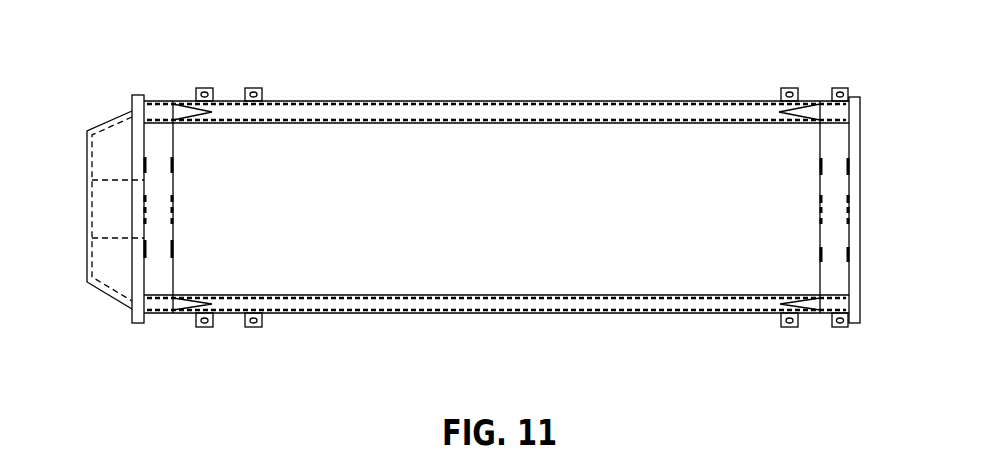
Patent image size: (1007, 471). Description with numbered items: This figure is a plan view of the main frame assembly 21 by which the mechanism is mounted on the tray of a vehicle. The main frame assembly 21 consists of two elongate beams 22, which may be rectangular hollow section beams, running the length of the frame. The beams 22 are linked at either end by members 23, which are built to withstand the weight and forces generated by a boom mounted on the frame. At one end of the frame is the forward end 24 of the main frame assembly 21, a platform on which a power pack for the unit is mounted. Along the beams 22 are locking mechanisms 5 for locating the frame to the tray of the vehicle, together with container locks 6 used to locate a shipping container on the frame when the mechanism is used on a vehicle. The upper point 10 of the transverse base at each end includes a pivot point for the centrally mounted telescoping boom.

The locking mechanism 5 is at (252, 87).
The container lock 6 is at (204, 87).
The upper point 10 is at (173, 270).
The main frame assembly 21 is at (501, 97).
The beam 22 is at (614, 124).
The member 23 is at (173, 180).
The forward end 24 is at (87, 157).